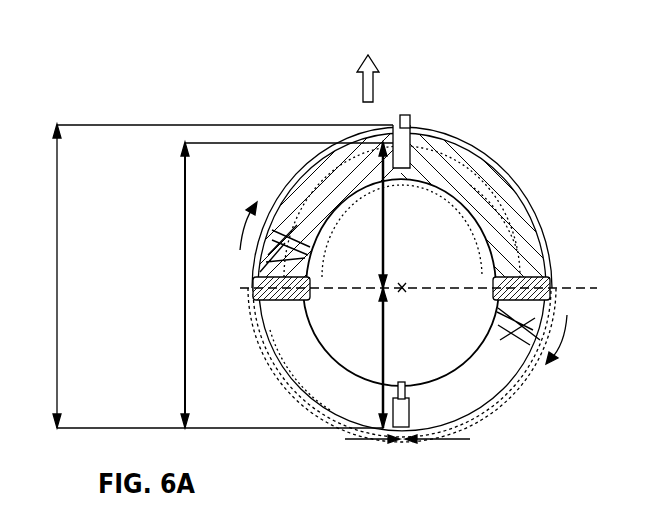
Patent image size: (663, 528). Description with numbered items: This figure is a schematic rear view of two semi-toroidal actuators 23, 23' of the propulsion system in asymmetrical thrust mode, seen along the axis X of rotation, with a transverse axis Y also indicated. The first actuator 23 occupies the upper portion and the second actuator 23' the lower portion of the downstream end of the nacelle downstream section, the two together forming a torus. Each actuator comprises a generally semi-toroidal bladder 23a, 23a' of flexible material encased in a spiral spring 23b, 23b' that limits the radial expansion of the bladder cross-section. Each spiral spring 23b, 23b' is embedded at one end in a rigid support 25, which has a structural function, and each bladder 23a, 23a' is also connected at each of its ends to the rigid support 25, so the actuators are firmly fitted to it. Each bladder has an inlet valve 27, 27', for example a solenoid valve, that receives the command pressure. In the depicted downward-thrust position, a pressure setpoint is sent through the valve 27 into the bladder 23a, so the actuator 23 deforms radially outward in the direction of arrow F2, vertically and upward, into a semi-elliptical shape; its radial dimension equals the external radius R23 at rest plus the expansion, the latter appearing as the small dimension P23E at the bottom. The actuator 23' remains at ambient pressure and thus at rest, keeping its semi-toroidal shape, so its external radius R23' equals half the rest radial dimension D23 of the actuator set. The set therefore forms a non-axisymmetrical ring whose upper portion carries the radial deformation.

The first actuator 23 is at (386, 200).
The second actuator 23' is at (408, 365).
The bladder 23a is at (546, 203).
The bladder 23a' is at (292, 403).
The spiral spring 23b is at (275, 175).
The spiral spring 23b' is at (558, 351).
The rigid support 25 is at (252, 293).
The inlet valve 27 is at (418, 116).
The inlet valve 27' is at (422, 368).
The radial deformation direction F2 is at (361, 88).
The external radius of the first actuator at rest R23 is at (418, 215).
The external radius of the second actuator R23' is at (349, 358).
The radial dimension of the set of actuators at rest D23 is at (185, 270).
The offset dimension P23E is at (468, 424).
The axis of rotation X is at (403, 283).
The y axis Y is at (428, 287).